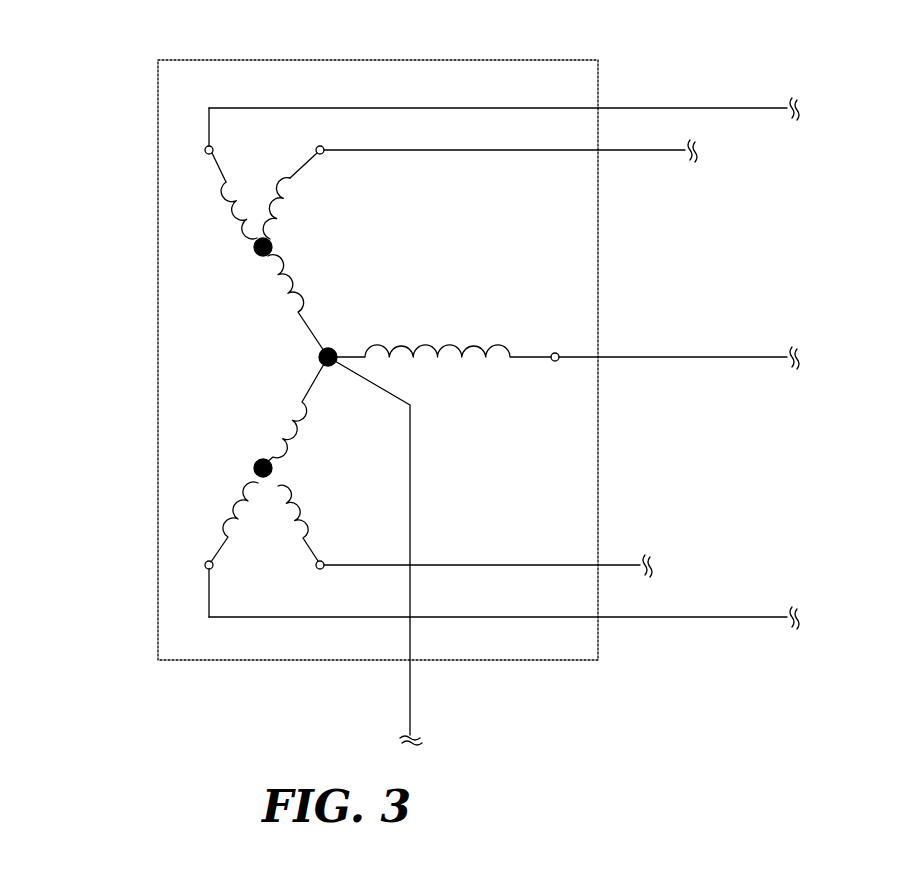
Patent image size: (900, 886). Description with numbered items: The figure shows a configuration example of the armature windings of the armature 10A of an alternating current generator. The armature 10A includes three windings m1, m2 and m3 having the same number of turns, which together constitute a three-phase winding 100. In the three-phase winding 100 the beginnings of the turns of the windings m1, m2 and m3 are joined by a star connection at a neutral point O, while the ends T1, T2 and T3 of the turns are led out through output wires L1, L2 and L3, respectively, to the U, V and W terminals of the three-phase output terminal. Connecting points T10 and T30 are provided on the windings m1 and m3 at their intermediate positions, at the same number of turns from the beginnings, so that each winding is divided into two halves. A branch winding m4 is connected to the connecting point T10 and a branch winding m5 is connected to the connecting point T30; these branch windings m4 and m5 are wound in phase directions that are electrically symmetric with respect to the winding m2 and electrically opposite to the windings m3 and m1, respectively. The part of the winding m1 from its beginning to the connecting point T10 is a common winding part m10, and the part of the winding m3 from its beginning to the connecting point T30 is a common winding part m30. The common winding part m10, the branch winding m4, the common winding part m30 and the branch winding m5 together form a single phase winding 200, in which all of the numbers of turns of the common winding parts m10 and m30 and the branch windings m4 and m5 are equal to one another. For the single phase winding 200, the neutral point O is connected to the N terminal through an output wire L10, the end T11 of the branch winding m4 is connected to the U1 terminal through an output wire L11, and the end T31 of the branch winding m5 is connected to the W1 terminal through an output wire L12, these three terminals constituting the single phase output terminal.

The armature 10A is at (575, 60).
The output wire L1 is at (757, 108).
The output wire L11 is at (622, 152).
The output wire L2 is at (757, 357).
The output wire L12 is at (622, 563).
The output wire L3 is at (756, 617).
The output wire L10 is at (410, 700).
The end of the turn of winding m1 T1 is at (206, 146).
The end of the turn of winding m4 T11 is at (323, 154).
The connecting point T10 is at (254, 250).
The end of the turn of winding m2 T2 is at (560, 352).
The end of the turn of winding m3 T3 is at (207, 569).
The end of the turn of winding m5 T31 is at (316, 565).
The connecting point T30 is at (254, 468).
The neutral point O is at (319, 357).
The winding m1 is at (232, 212).
The winding m2 is at (452, 345).
The winding m3 is at (245, 520).
The common winding part m10 is at (270, 287).
The branch winding m4 is at (280, 220).
The common winding part m30 is at (288, 441).
The branch winding m5 is at (300, 490).
The three-phase winding 100 is at (300, 372).
The single phase winding 200 is at (215, 369).